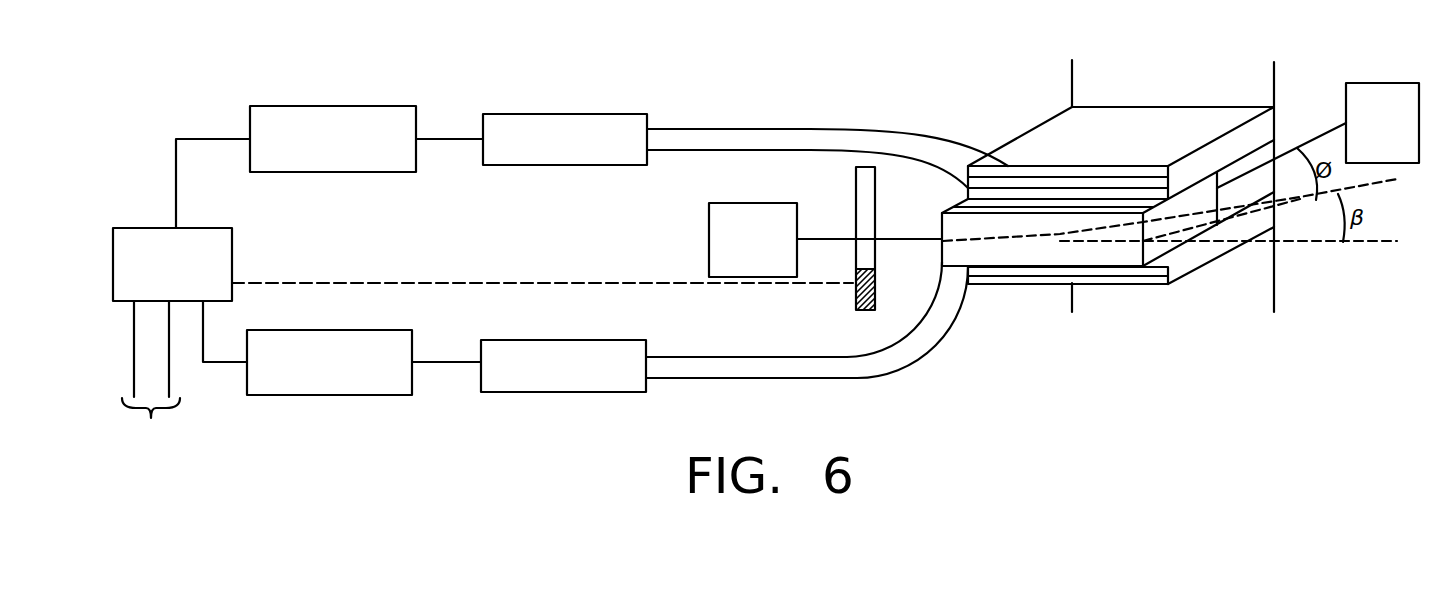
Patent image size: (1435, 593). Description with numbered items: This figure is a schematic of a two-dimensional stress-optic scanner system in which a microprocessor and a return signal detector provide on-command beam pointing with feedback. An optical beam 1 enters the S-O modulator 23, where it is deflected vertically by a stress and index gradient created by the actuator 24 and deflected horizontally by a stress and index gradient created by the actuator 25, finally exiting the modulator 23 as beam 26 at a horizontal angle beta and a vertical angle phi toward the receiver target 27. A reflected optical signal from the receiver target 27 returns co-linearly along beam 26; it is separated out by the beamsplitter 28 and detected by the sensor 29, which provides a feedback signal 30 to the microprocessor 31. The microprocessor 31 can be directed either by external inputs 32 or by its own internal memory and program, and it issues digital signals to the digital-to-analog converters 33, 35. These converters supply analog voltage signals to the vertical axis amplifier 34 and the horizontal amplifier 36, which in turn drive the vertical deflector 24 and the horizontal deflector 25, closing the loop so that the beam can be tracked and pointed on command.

The optical beam 1 is at (753, 240).
The S-O modulator 23 is at (1020, 255).
The actuator 24 is at (1037, 200).
The actuator 25 is at (1125, 175).
The beam 26 is at (1297, 148).
The receiver target 27 is at (1382, 123).
The beamsplitter 28 is at (875, 170).
The sensor 29 is at (875, 293).
The feedback signal 30 is at (370, 283).
The microprocessor 31 is at (172, 264).
The external inputs 32 is at (151, 375).
The digital-to-analog converter 33 is at (329, 362).
The vertical axis amplifier 34 is at (563, 366).
The digital-to-analog converter 35 is at (333, 139).
The horizontal amplifier 36 is at (565, 139).